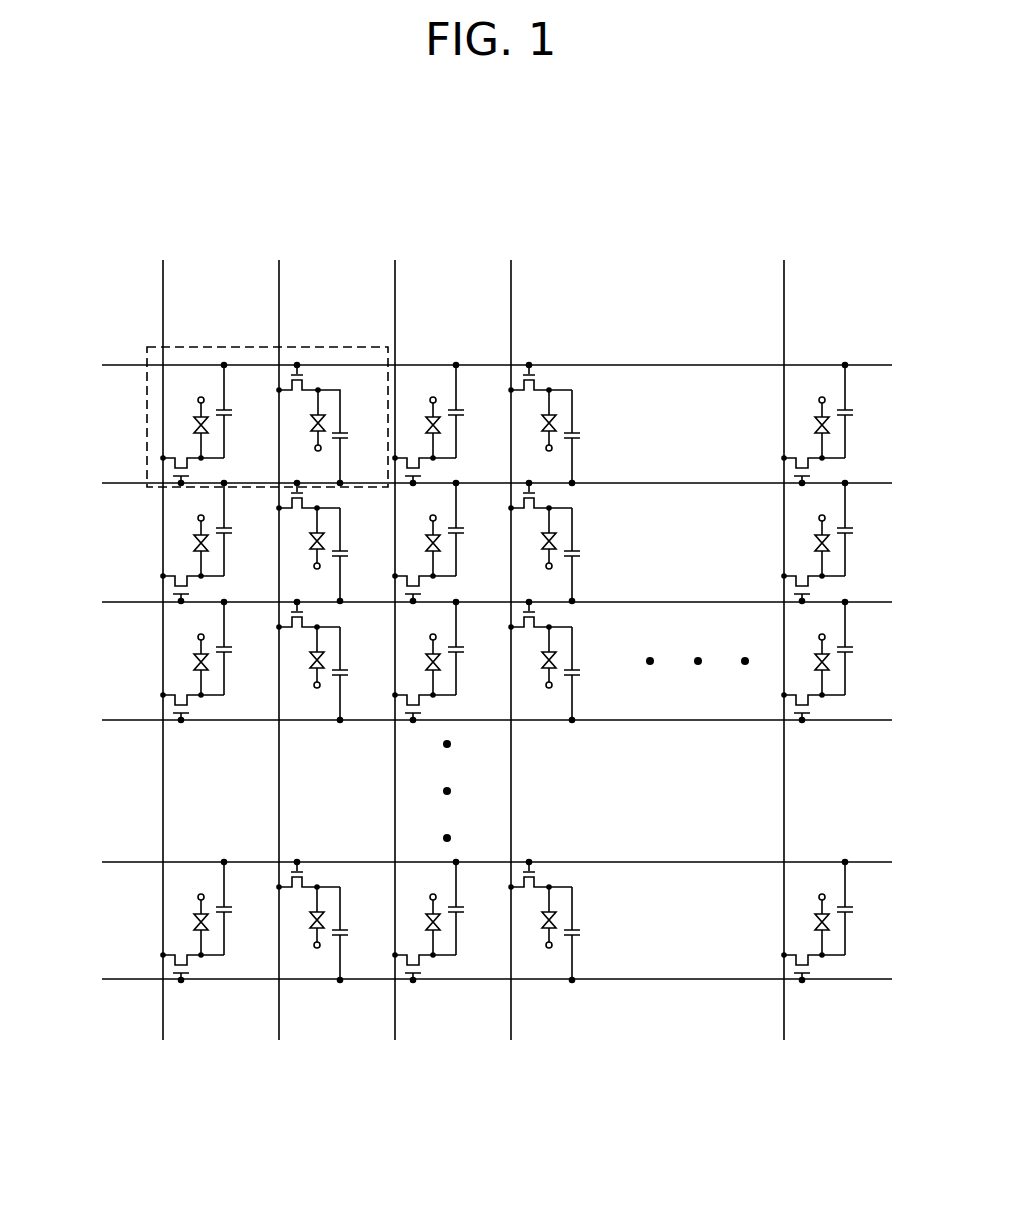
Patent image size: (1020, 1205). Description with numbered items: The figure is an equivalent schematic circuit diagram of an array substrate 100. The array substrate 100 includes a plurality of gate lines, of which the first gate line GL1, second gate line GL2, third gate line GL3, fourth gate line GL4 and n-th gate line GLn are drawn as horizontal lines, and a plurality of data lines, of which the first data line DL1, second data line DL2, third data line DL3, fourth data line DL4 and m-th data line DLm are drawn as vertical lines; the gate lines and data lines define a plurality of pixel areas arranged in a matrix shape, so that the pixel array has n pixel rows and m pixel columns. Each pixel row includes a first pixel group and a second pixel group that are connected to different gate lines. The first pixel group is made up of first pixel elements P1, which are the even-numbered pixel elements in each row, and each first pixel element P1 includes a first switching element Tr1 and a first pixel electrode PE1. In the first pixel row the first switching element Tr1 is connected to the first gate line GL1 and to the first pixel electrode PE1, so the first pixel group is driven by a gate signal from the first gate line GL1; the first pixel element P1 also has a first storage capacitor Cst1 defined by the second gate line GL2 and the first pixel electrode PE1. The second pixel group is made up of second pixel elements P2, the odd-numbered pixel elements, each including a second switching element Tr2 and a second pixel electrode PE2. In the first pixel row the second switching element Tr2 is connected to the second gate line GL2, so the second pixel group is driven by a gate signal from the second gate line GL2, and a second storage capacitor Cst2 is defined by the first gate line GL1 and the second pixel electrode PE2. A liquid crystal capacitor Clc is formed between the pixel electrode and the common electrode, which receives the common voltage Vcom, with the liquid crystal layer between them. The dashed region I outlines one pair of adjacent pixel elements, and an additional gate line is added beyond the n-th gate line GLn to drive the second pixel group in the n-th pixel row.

The array substrate 100 is at (488, 174).
The first data line DL1 is at (166, 637).
The second data line DL2 is at (282, 637).
The third data line DL3 is at (398, 637).
The fourth data line DL4 is at (514, 637).
The m-th data line DLm is at (790, 637).
The first gate line GL1 is at (473, 365).
The second gate line GL2 is at (473, 484).
The third gate line GL3 is at (473, 602).
The fourth gate line GL4 is at (473, 720).
The n-th gate line GLn is at (475, 862).
The first pixel element P1 is at (334, 373).
The second pixel element P2 is at (209, 383).
The first switching element Tr1 is at (312, 374).
The second switching element Tr2 is at (168, 466).
The first pixel electrode PE1 is at (321, 412).
The second pixel electrode PE2 is at (196, 424).
The first storage capacitor Cst1 is at (354, 438).
The second storage capacitor Cst2 is at (237, 411).
The liquid crystal capacitor Clc is at (185, 428).
The common voltage Vcom is at (198, 382).
The pixel region I is at (210, 346).